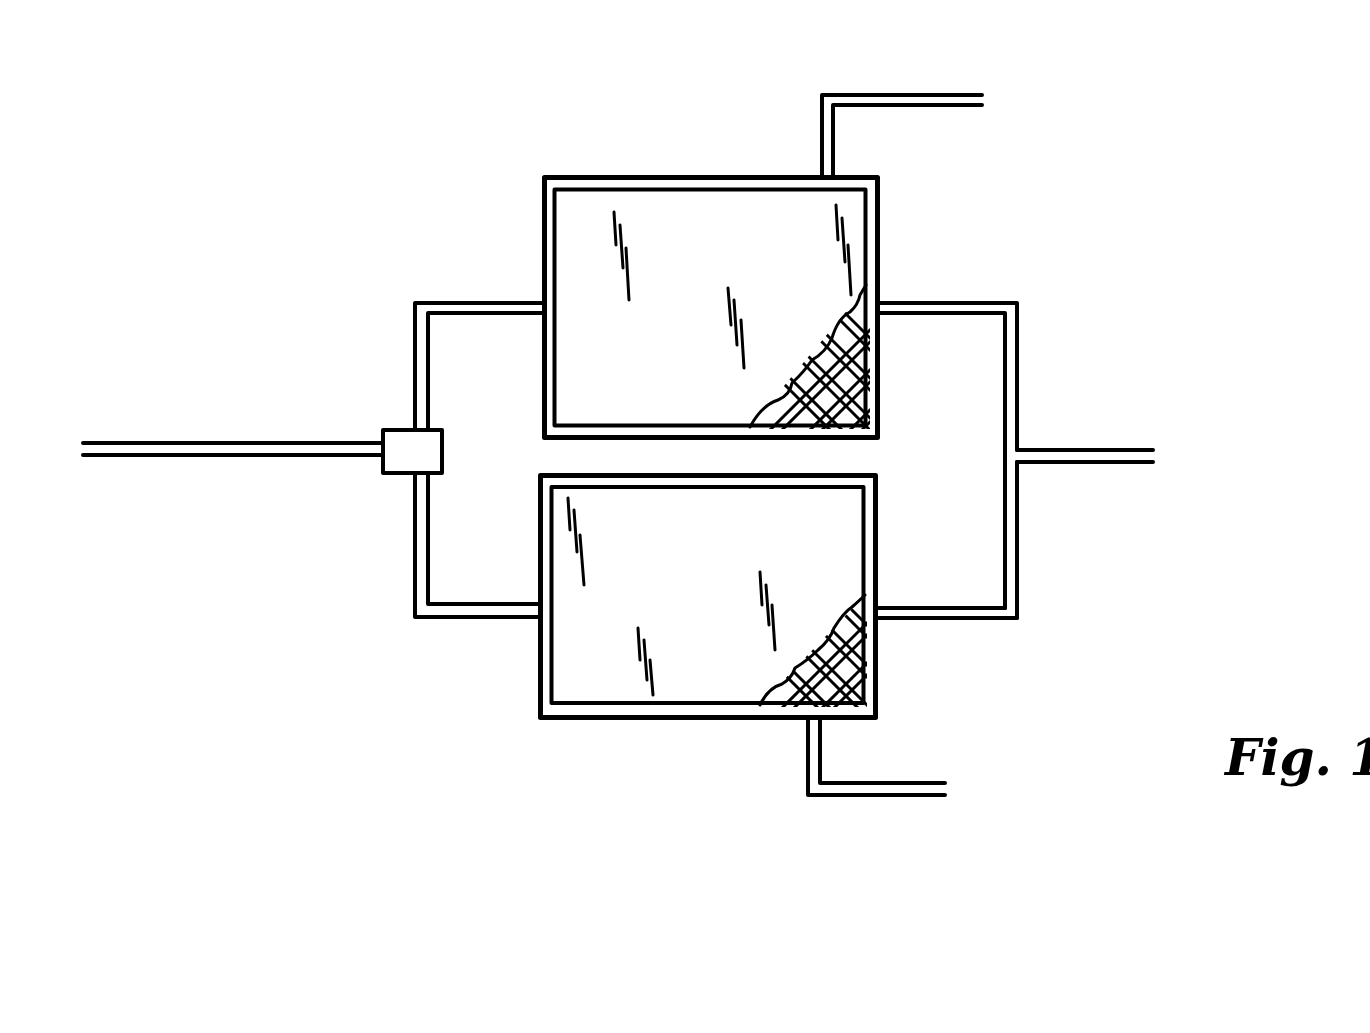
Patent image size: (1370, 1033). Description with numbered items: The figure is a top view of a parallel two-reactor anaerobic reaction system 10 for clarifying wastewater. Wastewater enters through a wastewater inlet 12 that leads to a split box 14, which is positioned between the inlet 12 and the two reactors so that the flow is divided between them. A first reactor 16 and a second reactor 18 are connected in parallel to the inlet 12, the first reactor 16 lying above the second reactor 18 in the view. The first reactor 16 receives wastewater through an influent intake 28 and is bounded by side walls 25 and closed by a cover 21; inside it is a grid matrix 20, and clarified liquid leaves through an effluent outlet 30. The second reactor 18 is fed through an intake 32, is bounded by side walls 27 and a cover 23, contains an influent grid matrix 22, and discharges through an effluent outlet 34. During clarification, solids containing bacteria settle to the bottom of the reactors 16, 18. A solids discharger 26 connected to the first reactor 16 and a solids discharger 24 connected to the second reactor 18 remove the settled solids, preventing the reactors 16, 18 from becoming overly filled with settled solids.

The anaerobic reaction system 10 is at (445, 124).
The wastewater inlet 12 is at (210, 443).
The split box 14 is at (395, 430).
The first reactor 16 is at (739, 301).
The second reactor 18 is at (735, 633).
The grid matrix 20 is at (860, 357).
The cover 21 is at (640, 207).
The influent grid matrix 22 is at (865, 660).
The cover 23 is at (873, 548).
The solids discharger 24 is at (832, 797).
The side walls 25 is at (542, 398).
The solids discharger 26 is at (855, 93).
The side walls 27 is at (543, 515).
The influent intake 28 is at (540, 303).
The effluent outlet 30 is at (882, 300).
The intake 32 is at (538, 603).
The effluent outlet 34 is at (882, 604).